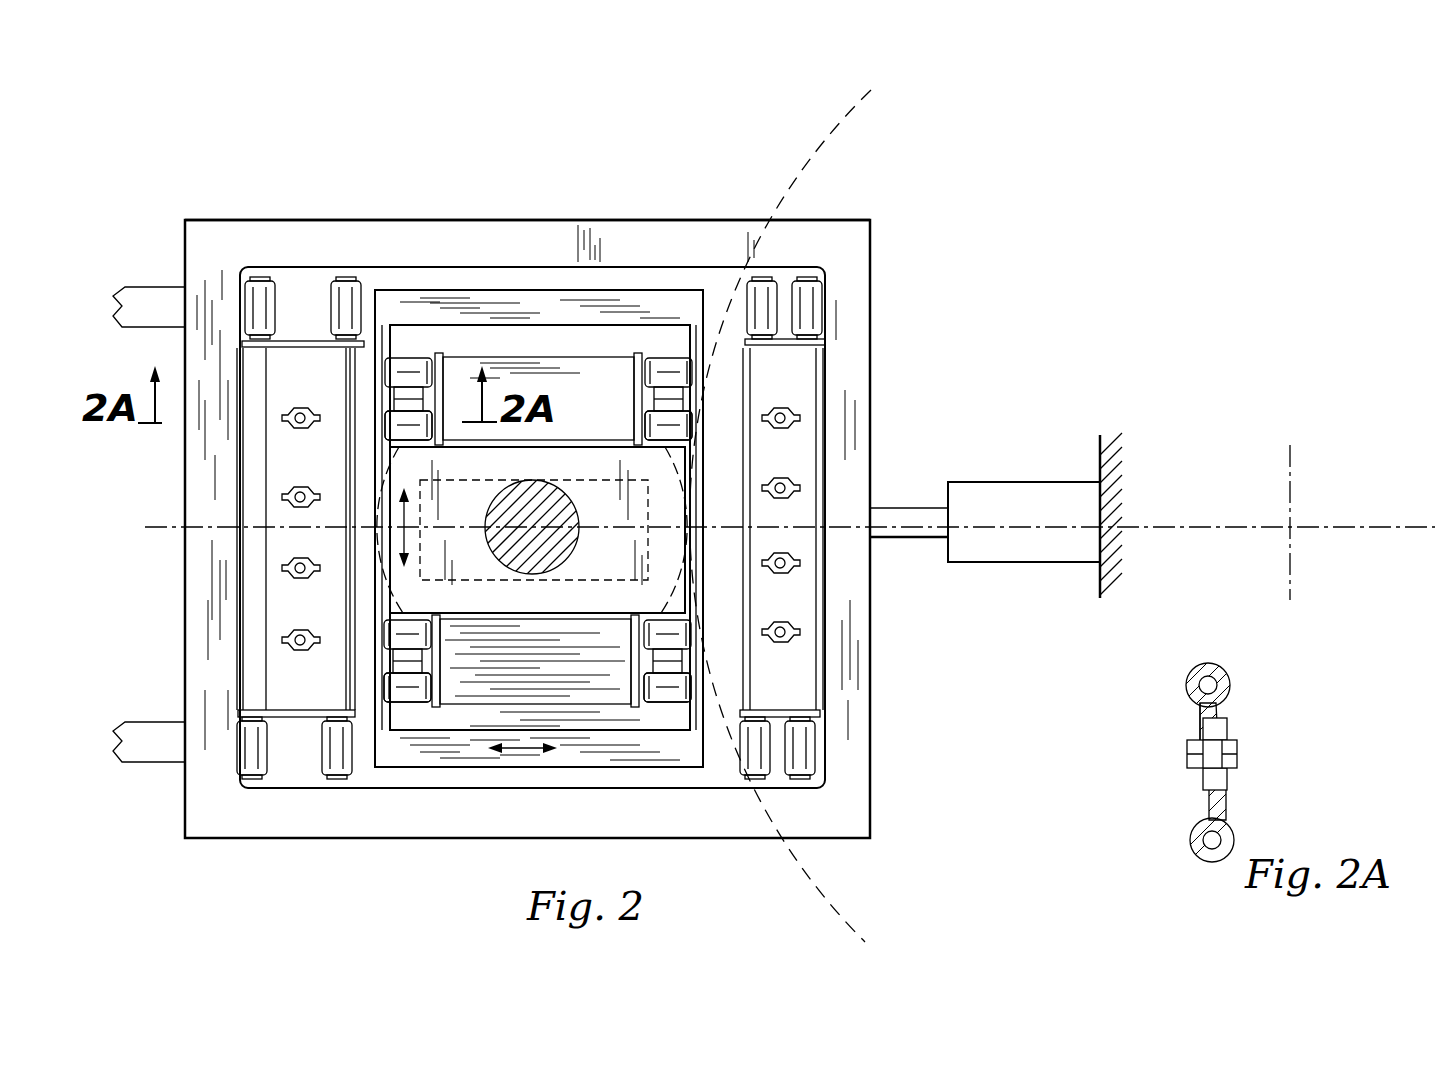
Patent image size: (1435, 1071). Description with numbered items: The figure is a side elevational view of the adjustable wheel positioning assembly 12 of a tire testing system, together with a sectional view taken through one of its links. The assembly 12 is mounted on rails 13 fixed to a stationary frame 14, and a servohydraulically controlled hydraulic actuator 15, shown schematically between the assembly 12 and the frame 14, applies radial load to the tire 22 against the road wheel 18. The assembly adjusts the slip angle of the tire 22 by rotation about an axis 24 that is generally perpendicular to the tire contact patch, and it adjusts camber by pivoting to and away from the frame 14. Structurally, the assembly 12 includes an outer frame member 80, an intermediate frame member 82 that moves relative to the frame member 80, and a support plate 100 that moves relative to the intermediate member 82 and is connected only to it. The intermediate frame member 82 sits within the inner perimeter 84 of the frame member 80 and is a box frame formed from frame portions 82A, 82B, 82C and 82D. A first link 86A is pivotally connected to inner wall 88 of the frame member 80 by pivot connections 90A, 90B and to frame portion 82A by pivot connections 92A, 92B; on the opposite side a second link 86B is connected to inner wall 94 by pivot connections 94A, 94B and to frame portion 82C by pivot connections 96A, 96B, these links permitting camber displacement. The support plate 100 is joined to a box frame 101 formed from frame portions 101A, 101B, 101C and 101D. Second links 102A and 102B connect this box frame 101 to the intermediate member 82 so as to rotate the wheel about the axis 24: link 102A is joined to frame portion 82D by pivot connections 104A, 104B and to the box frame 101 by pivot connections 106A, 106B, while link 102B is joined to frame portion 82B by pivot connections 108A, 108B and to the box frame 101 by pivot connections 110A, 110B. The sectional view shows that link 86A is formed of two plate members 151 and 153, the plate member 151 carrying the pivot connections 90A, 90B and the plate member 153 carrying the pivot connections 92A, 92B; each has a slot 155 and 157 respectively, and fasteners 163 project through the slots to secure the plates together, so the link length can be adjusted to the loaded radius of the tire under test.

In FIG. 2, the adjustable wheel positioning assembly 12 is at (520, 210).
In FIG. 2, the rails 13 is at (125, 290).
In FIG. 2, the stationary frame 14 is at (1100, 440).
In FIG. 2, the hydraulic actuator 15 is at (1015, 482).
In FIG. 2, the road wheel 18 is at (882, 88).
In FIG. 2, the tire 22 is at (592, 264).
In FIG. 2, the axis 24 is at (1170, 524).
In FIG. 2, the frame member 80 is at (313, 220).
In FIG. 2, the intermediate frame member 82 is at (412, 282).
In FIG. 2, the frame portion 82A is at (365, 768).
In FIG. 2, the frame portion 82B is at (440, 768).
In FIG. 2, the frame portion 82C is at (705, 490).
In FIG. 2, the frame portion 82D is at (497, 266).
In FIG. 2, the inner perimeter 84 is at (390, 267).
In FIG. 2, the first link 86A is at (290, 290).
In FIG. 2, the second link 86B is at (808, 282).
In FIG. 2, the inner wall 88 is at (243, 620).
In FIG. 2, the pivot connection 90A is at (247, 283).
In FIG. 2A, the pivot connection 90A is at (1192, 838).
In FIG. 2, the pivot connection 90B is at (250, 778).
In FIG. 2, the pivot connection 92A is at (340, 283).
In FIG. 2A, the pivot connection 92A is at (1224, 672).
In FIG. 2, the pivot connection 92B is at (335, 777).
In FIG. 2, the inner wall 94 is at (825, 388).
In FIG. 2, the pivot connection 94A is at (848, 262).
In FIG. 2, the pivot connection 94B is at (820, 782).
In FIG. 2, the pivot connection 96A is at (762, 282).
In FIG. 2, the pivot connection 96B is at (770, 778).
In FIG. 2, the support plate 100 is at (393, 467).
In FIG. 2, the box frame 101 is at (385, 592).
In FIG. 2, the frame portion 101A is at (400, 557).
In FIG. 2, the frame portion 101B is at (483, 745).
In FIG. 2, the frame portion 101C is at (670, 548).
In FIG. 2, the frame portion 101D is at (573, 457).
In FIG. 2, the second link 102A is at (575, 357).
In FIG. 2, the second link 102B is at (505, 700).
In FIG. 2, the pivot connection 104A is at (390, 372).
In FIG. 2, the pivot connection 104B is at (690, 365).
In FIG. 2, the pivot connection 106A is at (387, 422).
In FIG. 2, the pivot connection 106B is at (690, 425).
In FIG. 2, the pivot connection 108A is at (395, 680).
In FIG. 2, the pivot connection 108B is at (690, 680).
In FIG. 2, the pivot connection 110A is at (383, 630).
In FIG. 2, the pivot connection 110B is at (690, 628).
In FIG. 2, the plate member 151 is at (250, 498).
In FIG. 2A, the plate member 151 is at (1226, 785).
In FIG. 2, the plate member 153 is at (288, 540).
In FIG. 2A, the plate member 153 is at (1200, 716).
In FIG. 2A, the slot 155 is at (1226, 728).
In FIG. 2A, the slot 157 is at (1200, 778).
In FIG. 2, the fasteners 163 is at (298, 645).
In FIG. 2A, the fasteners 163 is at (1242, 750).